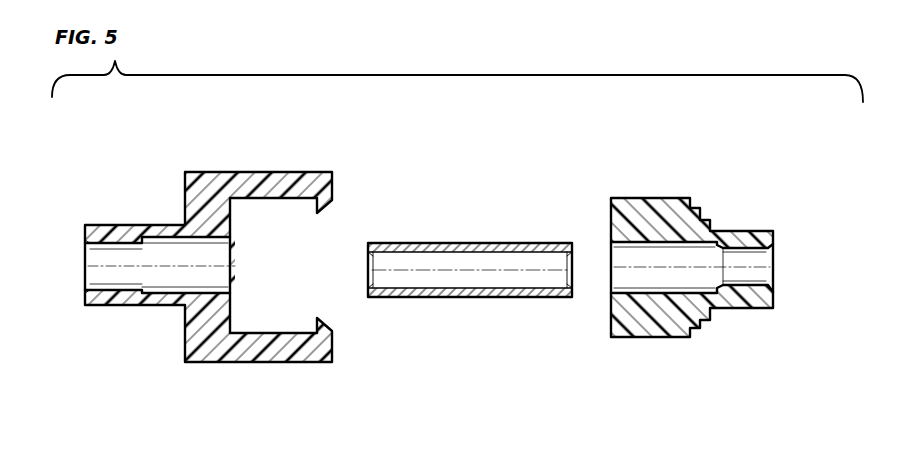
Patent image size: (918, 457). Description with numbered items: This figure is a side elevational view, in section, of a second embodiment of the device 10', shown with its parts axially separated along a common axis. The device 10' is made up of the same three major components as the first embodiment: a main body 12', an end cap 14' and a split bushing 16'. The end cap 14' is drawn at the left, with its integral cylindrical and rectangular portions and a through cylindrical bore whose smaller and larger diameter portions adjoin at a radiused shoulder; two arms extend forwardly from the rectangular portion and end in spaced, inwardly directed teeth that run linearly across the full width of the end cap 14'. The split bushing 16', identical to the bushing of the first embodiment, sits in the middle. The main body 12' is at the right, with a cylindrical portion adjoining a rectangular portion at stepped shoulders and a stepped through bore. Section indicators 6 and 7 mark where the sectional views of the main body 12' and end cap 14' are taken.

The section line 7- 7 is at (118, 145).
The section line 6- 6 is at (784, 145).
The end cap 14' is at (198, 276).
The split bushing 16' is at (470, 229).
The device 10' is at (470, 280).
The main body 12' is at (687, 319).